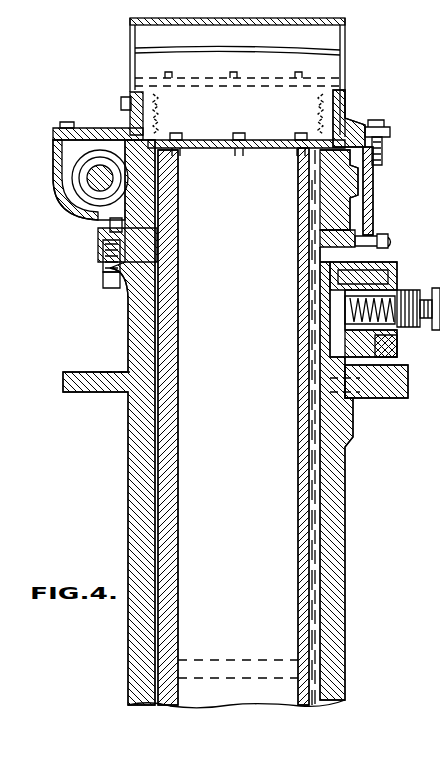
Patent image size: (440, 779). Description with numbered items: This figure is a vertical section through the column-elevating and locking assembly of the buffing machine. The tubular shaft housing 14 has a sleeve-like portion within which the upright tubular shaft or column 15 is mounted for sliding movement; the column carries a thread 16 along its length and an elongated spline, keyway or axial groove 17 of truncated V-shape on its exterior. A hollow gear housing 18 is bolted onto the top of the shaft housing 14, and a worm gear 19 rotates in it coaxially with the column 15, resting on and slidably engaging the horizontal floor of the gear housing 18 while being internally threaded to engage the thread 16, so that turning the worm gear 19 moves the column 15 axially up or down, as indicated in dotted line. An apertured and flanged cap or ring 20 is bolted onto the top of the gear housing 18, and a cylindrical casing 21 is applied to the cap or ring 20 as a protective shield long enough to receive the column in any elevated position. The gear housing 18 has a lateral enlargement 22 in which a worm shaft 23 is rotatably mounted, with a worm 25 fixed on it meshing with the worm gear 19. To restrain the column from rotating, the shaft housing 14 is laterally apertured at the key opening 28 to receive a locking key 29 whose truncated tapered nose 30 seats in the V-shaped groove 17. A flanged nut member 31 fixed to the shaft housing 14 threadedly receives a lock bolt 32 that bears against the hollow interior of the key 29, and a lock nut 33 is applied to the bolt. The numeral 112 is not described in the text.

The tubular shaft housing 14 is at (130, 409).
The tubular shaft or column 15 is at (178, 480).
The thread 16 is at (118, 128).
The spline, keyway or axial groove 17 is at (320, 445).
The gear housing 18 is at (375, 197).
The worm gear 19 is at (98, 238).
The cap or ring 20 is at (350, 125).
The cylindrical casing 21 is at (242, 20).
The lateral enlargement 22 is at (64, 194).
The worm shaft 23 is at (70, 218).
The worm 25 is at (90, 165).
The key opening 28 is at (305, 365).
The locking key 29 is at (310, 290).
The tapered nose 30 is at (322, 305).
The flanged nut member 31 is at (406, 368).
The lock bolt 32 is at (397, 336).
The lock nut 33 is at (408, 290).
The element 112 is at (424, 448).